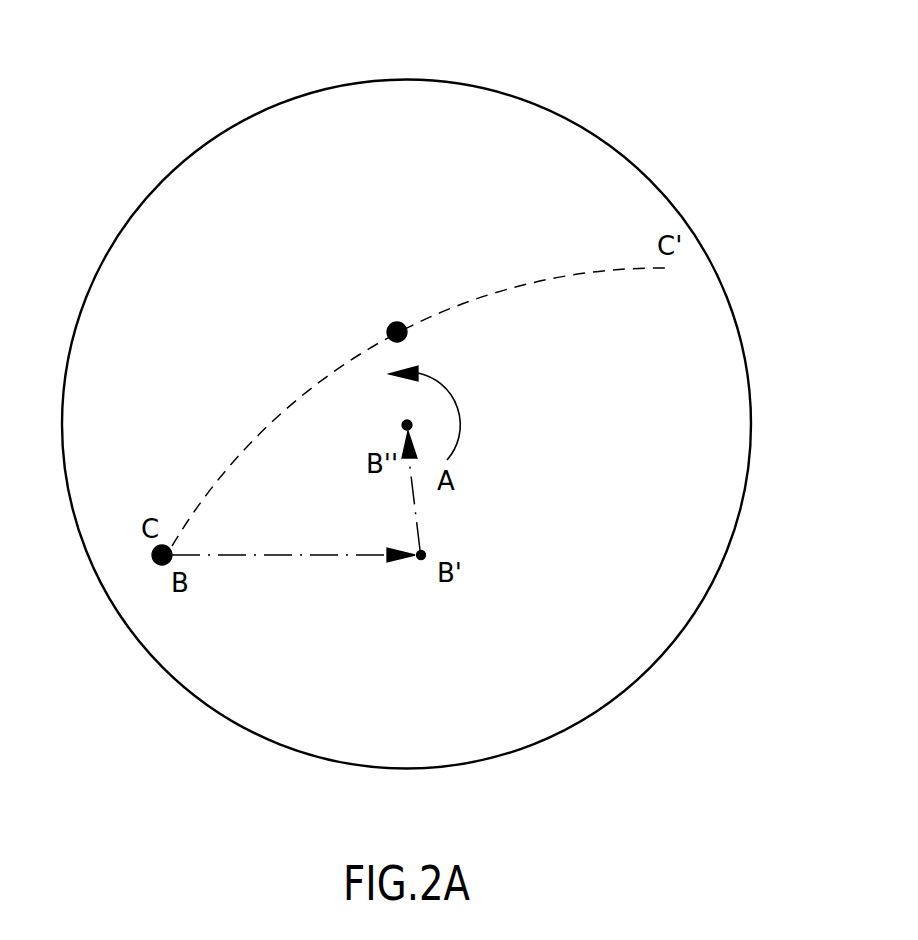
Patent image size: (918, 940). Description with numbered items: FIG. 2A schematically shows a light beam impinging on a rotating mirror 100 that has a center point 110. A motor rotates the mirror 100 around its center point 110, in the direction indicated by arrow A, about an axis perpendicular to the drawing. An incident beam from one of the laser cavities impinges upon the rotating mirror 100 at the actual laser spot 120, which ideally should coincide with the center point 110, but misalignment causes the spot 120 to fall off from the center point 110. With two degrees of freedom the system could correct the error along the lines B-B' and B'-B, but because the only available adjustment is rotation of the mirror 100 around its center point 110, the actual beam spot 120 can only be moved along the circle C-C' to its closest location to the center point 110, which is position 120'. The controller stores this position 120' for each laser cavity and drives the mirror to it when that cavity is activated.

The rotating mirror 100 is at (682, 155).
The center point 110 is at (420, 418).
The actual laser spot 120 is at (95, 594).
The closest position of laser spot 120' is at (457, 178).